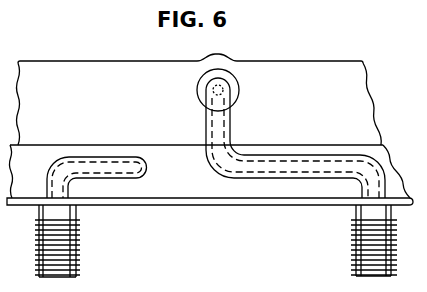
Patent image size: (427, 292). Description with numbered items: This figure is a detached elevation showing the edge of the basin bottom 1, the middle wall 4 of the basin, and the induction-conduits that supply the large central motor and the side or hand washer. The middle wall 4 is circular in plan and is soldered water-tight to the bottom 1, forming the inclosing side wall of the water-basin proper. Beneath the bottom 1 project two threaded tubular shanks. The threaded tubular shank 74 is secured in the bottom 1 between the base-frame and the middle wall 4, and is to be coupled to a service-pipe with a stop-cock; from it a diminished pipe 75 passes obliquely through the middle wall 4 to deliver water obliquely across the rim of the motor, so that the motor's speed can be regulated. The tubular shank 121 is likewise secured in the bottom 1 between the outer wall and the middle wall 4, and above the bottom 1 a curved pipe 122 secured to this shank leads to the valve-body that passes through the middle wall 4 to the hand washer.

The bottom 1 is at (210, 210).
The middle wall 4 is at (209, 126).
The threaded tubular shank 74 is at (57, 241).
The diminished pipe 75 is at (97, 177).
The tubular shank 121 is at (374, 240).
The curved pipe 122 is at (295, 138).